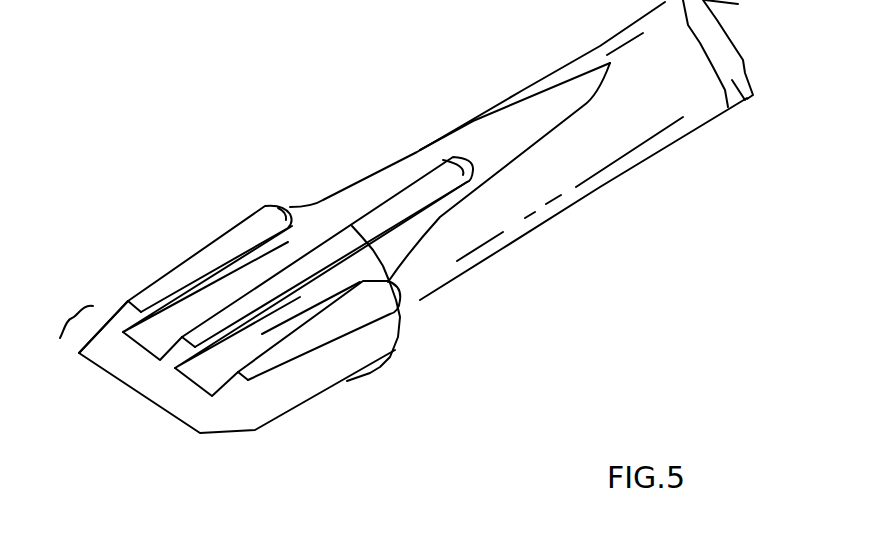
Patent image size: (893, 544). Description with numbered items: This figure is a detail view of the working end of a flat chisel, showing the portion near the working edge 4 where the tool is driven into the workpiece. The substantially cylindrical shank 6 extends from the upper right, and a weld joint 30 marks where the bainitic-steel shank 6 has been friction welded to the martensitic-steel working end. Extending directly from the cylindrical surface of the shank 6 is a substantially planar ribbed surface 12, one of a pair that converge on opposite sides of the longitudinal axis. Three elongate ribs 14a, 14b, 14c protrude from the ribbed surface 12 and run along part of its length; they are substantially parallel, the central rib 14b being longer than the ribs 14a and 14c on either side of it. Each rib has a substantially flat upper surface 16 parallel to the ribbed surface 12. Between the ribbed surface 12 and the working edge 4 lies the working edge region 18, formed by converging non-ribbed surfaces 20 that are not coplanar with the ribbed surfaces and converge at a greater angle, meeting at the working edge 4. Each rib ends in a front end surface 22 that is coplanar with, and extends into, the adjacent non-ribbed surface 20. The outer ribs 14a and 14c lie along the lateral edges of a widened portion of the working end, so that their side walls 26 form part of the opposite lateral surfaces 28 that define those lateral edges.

The working edge 4 is at (125, 386).
The cylindrical shank 6 is at (735, 80).
The ribbed surface 12 is at (316, 223).
The elongate rib 14a is at (236, 231).
The central rib 14b is at (238, 305).
The elongate rib 14c is at (288, 343).
The flat upper surface 16 is at (417, 183).
The working edge region 18 is at (60, 311).
The non-ribbed surface 20 is at (187, 402).
The front end surface 22 is at (230, 387).
The side wall 26 is at (357, 232).
The lateral surface 28 is at (305, 385).
The weld joint 30 is at (753, 6).